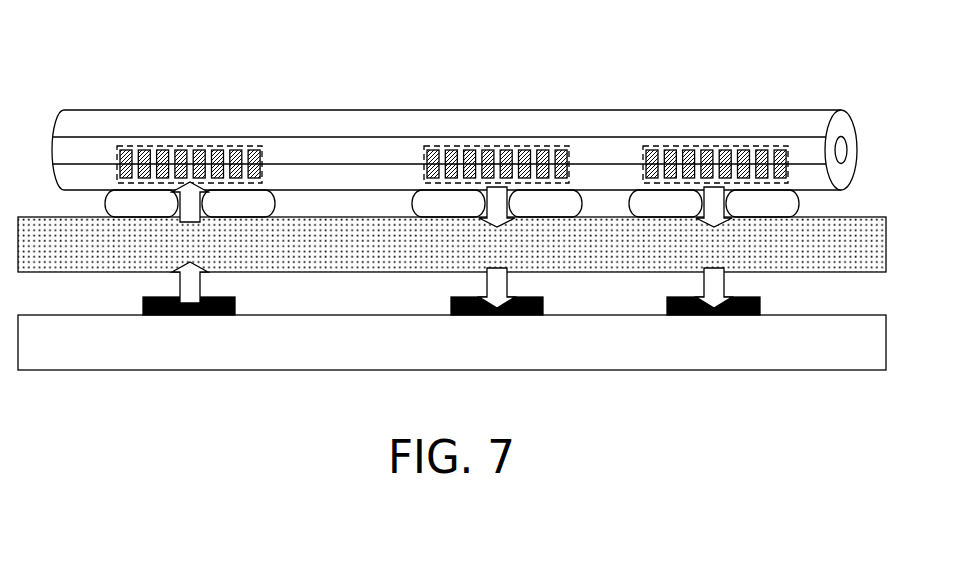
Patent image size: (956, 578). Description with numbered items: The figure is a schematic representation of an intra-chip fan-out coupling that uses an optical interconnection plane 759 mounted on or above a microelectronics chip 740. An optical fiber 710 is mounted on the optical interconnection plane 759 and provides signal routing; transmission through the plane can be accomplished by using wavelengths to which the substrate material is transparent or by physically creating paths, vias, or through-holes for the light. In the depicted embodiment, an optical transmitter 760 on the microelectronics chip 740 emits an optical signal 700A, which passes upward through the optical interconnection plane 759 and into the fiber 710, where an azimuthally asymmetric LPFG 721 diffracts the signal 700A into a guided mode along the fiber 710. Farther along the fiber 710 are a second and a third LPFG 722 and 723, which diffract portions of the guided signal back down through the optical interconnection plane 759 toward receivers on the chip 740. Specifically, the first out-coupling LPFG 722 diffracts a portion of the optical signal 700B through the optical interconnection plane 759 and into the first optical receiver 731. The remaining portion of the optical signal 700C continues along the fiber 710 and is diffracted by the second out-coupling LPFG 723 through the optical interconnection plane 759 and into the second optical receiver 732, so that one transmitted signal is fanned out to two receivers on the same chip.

The optical fiber 710 is at (325, 122).
The azimuthally asymmetric LPFG 721 is at (188, 145).
The first out-coupling LPFG 722 is at (495, 145).
The second out-coupling LPFG 723 is at (712, 145).
The optical interconnection plane 759 is at (452, 244).
The microelectronics chip 740 is at (452, 342).
The optical transmitter 760 is at (153, 312).
The first optical receiver 731 is at (460, 312).
The second optical receiver 732 is at (677, 312).
The optical signal 700A is at (190, 203).
The portion of the optical signal 700B is at (498, 203).
The remaining portion of the optical signal 700C is at (715, 203).